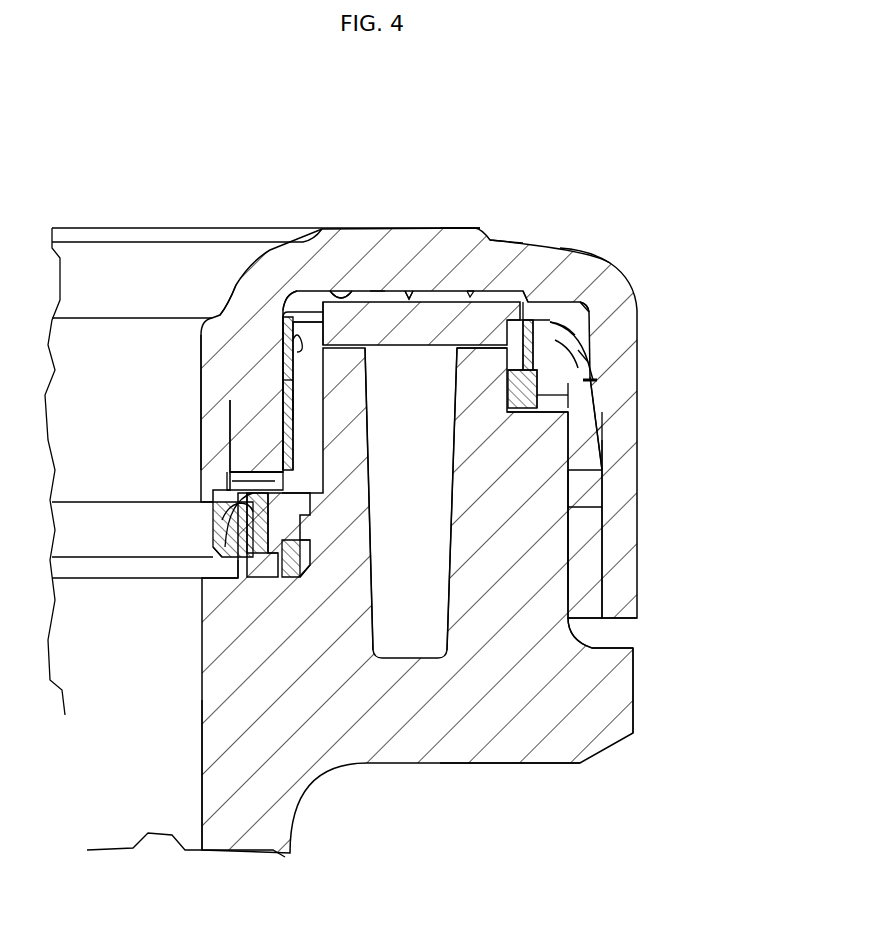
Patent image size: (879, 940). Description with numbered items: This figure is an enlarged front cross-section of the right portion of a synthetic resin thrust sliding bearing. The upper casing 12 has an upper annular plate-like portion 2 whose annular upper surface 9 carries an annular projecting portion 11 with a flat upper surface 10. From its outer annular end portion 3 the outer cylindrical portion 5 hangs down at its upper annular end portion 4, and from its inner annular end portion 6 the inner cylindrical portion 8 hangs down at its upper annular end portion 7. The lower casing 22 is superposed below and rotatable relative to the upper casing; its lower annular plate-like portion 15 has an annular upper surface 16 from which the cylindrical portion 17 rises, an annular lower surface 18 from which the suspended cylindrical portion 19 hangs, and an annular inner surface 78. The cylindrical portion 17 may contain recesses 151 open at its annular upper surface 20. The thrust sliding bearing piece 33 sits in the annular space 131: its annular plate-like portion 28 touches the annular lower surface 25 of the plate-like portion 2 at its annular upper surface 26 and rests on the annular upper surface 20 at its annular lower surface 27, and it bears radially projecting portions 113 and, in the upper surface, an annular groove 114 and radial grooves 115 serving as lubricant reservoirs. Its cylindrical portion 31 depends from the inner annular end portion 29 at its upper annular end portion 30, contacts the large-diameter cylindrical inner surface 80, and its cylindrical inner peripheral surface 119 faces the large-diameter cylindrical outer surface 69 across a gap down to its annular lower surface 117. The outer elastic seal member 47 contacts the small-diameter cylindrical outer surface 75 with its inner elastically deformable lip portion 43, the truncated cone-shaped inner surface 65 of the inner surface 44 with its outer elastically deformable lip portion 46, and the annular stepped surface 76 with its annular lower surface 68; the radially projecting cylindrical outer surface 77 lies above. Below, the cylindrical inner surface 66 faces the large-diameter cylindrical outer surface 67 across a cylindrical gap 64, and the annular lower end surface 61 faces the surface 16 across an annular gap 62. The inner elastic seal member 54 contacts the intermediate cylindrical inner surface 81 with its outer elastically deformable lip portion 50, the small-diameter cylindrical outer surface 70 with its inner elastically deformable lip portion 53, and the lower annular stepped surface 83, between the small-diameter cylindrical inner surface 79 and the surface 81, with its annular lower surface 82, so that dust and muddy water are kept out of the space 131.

The flat upper surface 10 is at (153, 228).
The upper casing 12 is at (607, 243).
The outer cylindrical portion 5 is at (617, 485).
The radial grooves 115 is at (392, 302).
The lower annular plate-like portion 15 is at (420, 722).
The recesses 151 is at (397, 630).
The suspended cylindrical portion 19 is at (260, 830).
The annular lower surface 18 is at (473, 765).
The lower casing 22 is at (516, 778).
The cylindrical portion 17 is at (557, 573).
The annular upper surface 16 is at (620, 641).
The annular gap 62 is at (613, 640).
The annular lower end surface 61 is at (612, 630).
The cylindrical gap 64 is at (582, 593).
The cylindrical inner surface 66 is at (590, 543).
The large-diameter cylindrical outer surface 67 is at (570, 507).
The inner surface 44 is at (590, 452).
The annular lower surface 68 is at (540, 410).
The outer annular end portion 3 is at (589, 325).
The upper annular end portion 4 is at (615, 320).
The outer elastic seal member 47 is at (615, 300).
The outer elastically deformable lip portion 46 is at (580, 340).
The small-diameter cylindrical outer surface 75 is at (585, 370).
The inner elastically deformable lip portion 43 is at (596, 381).
The truncated cone-shaped inner surface 65 is at (585, 400).
The annular stepped surface 76 is at (592, 400).
The annular projecting portion 11 is at (463, 236).
The annular plate-like portion 28 is at (473, 293).
The annular space 131 is at (527, 287).
The annular lower surface 27 is at (432, 357).
The annular upper surface 9 is at (507, 241).
The radially projecting portions 113 is at (567, 297).
The radially projecting cylindrical outer surface 77 is at (612, 285).
The annular lower surface 25 is at (413, 287).
The upper annular plate-like portion 2 is at (377, 260).
The annular upper surface 26 is at (351, 295).
The annular groove 114 is at (345, 335).
The annular upper surface 20 is at (308, 312).
The inner annular end portion 29 is at (306, 322).
The inner annular end portion 6 is at (253, 320).
The upper annular end portion 30 is at (307, 362).
The cylindrical inner peripheral surface 119 is at (293, 350).
The upper annular end portion 7 is at (223, 348).
The large-diameter cylindrical inner surface 80 is at (303, 378).
The cylindrical portion 31 is at (303, 397).
The inner cylindrical portion 8 is at (213, 435).
The large-diameter cylindrical outer surface 69 is at (280, 456).
The thrust sliding bearing piece 33 is at (287, 458).
The annular lower surface 117 is at (273, 480).
The inner elastically deformable lip portion 53 is at (230, 513).
The small-diameter cylindrical outer surface 70 is at (227, 547).
The small-diameter cylindrical inner surface 79 is at (278, 575).
The inner elastic seal member 54 is at (258, 547).
The intermediate cylindrical inner surface 81 is at (236, 574).
The outer elastically deformable lip portion 50 is at (298, 568).
The lower annular stepped surface 83 is at (305, 585).
The annular lower surface 82 is at (312, 585).
The annular inner surface 78 is at (202, 742).